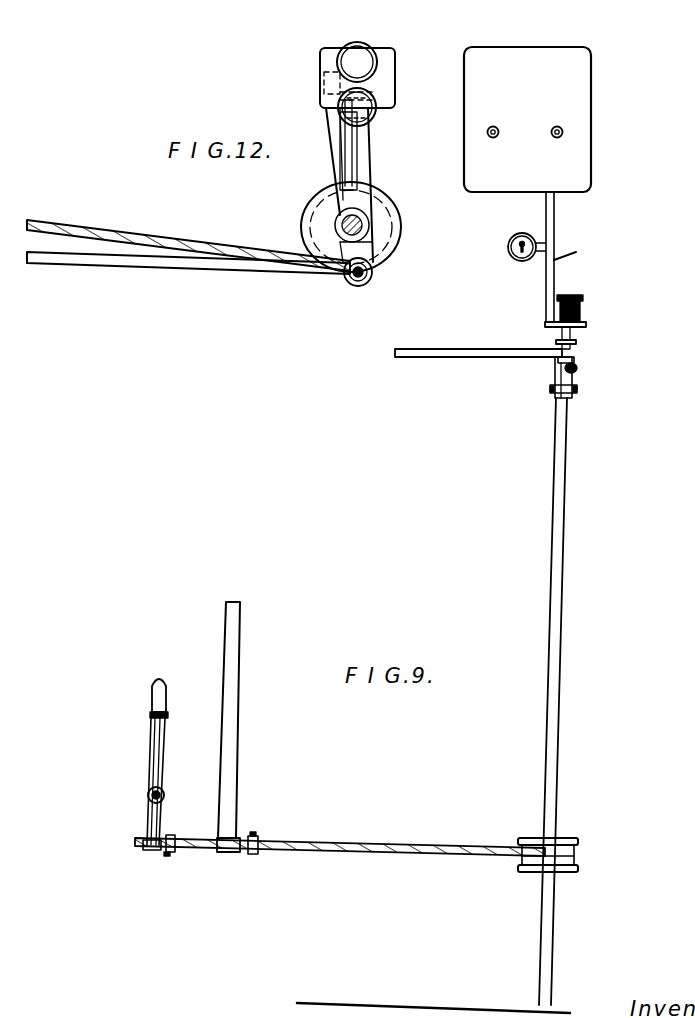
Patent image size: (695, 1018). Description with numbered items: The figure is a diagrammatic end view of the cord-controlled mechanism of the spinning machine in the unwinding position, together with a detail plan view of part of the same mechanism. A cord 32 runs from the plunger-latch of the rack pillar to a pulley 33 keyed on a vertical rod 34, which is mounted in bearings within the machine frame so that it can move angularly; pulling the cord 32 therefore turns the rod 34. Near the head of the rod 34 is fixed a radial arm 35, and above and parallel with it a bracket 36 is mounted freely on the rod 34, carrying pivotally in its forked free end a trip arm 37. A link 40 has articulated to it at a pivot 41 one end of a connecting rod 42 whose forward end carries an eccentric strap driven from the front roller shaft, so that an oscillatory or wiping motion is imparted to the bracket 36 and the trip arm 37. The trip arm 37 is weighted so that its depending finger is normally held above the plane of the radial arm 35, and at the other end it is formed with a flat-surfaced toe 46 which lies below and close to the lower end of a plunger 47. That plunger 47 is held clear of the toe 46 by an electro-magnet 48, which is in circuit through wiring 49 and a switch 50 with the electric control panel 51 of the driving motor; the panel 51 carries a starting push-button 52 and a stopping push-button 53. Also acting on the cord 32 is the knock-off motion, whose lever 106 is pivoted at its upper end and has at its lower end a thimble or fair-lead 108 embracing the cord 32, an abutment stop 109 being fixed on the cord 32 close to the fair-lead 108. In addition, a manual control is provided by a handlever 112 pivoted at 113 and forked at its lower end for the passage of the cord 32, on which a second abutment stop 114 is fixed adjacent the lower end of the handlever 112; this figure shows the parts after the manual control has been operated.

In FIG. 12, the cord 32 is at (92, 232).
In FIG. 9, the cord 32 is at (410, 836).
In FIG. 12, the pulley 33 is at (396, 204).
In FIG. 9, the pulley 33 is at (572, 846).
In FIG. 12, the vertical rod 34 is at (341, 224).
In FIG. 9, the vertical rod 34 is at (553, 702).
In FIG. 12, the radial arm 35 is at (333, 112).
In FIG. 9, the radial arm 35 is at (577, 394).
In FIG. 12, the bracket 36 is at (358, 160).
In FIG. 9, the bracket 36 is at (573, 378).
In FIG. 12, the trip arm 37 is at (353, 134).
In FIG. 9, the trip arm 37 is at (560, 347).
In FIG. 12, the link 40 is at (360, 248).
In FIG. 9, the link 40 is at (578, 370).
In FIG. 12, the articulation 41 is at (350, 276).
In FIG. 9, the articulation 41 is at (576, 358).
In FIG. 12, the connecting rod 42 is at (162, 262).
In FIG. 9, the connecting rod 42 is at (440, 350).
In FIG. 12, the flat-surfaced toe 46 is at (326, 66).
In FIG. 9, the flat-surfaced toe 46 is at (556, 340).
In FIG. 9, the plunger 47 is at (560, 324).
In FIG. 12, the electro-magnet 48 is at (368, 60).
In FIG. 9, the electro-magnet 48 is at (574, 300).
In FIG. 9, the wiring 49 is at (570, 256).
In FIG. 9, the switch 50 is at (508, 248).
In FIG. 9, the electric control panel 51 is at (500, 60).
In FIG. 9, the starting push-button 52 is at (490, 138).
In FIG. 9, the stopping push-button 53 is at (556, 138).
In FIG. 9, the lever 106 is at (236, 652).
In FIG. 9, the thimble or fair-lead 108 is at (232, 852).
In FIG. 9, the abutment stop 109 is at (258, 836).
In FIG. 9, the handlever 112 is at (162, 765).
In FIG. 9, the pivot 113 is at (165, 795).
In FIG. 9, the second abutment stop 114 is at (172, 834).